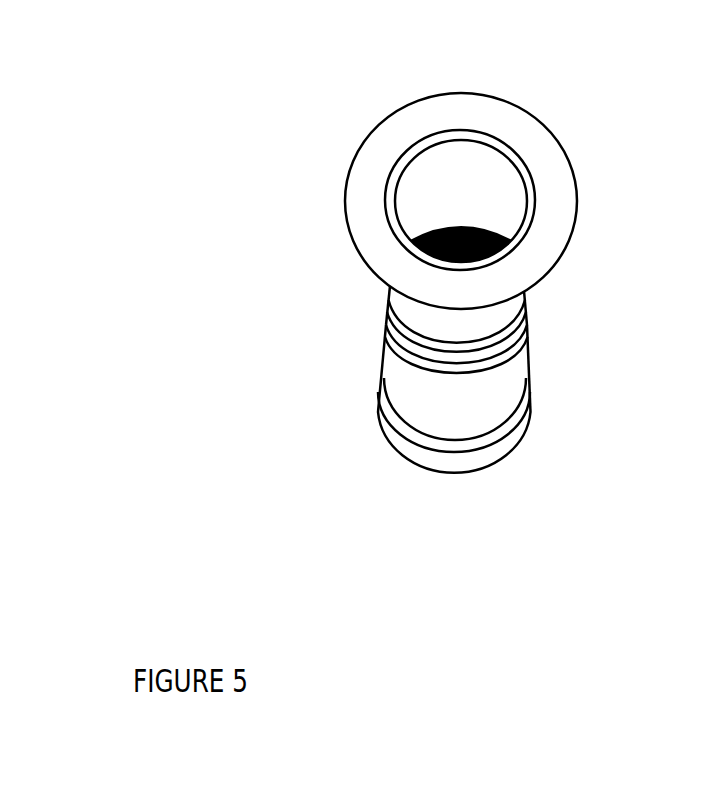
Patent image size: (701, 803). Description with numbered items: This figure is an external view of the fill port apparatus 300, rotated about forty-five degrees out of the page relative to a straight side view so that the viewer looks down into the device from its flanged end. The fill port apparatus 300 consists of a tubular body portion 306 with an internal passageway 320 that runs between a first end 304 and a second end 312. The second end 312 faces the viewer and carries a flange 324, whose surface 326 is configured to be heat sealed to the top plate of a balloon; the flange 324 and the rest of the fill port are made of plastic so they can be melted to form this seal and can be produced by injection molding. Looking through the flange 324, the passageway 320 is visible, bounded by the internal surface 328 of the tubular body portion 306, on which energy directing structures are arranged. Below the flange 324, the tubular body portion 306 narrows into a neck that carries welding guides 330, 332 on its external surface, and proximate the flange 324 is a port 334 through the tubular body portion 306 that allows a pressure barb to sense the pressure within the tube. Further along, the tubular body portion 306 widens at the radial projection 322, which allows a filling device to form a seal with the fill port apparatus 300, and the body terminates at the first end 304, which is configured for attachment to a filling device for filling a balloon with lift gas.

The fill port apparatus 300 is at (322, 170).
The second end 312 is at (452, 177).
The internal surface 328 is at (492, 198).
The flange 324 is at (578, 195).
The surface 326 is at (367, 233).
The internal passageway 320 is at (461, 231).
The welding guide 332 is at (525, 320).
The tubular body portion 306 is at (528, 355).
The welding guide 330 is at (385, 343).
The port 334 is at (370, 375).
The radial projection 322 is at (376, 404).
The first end 304 is at (446, 505).